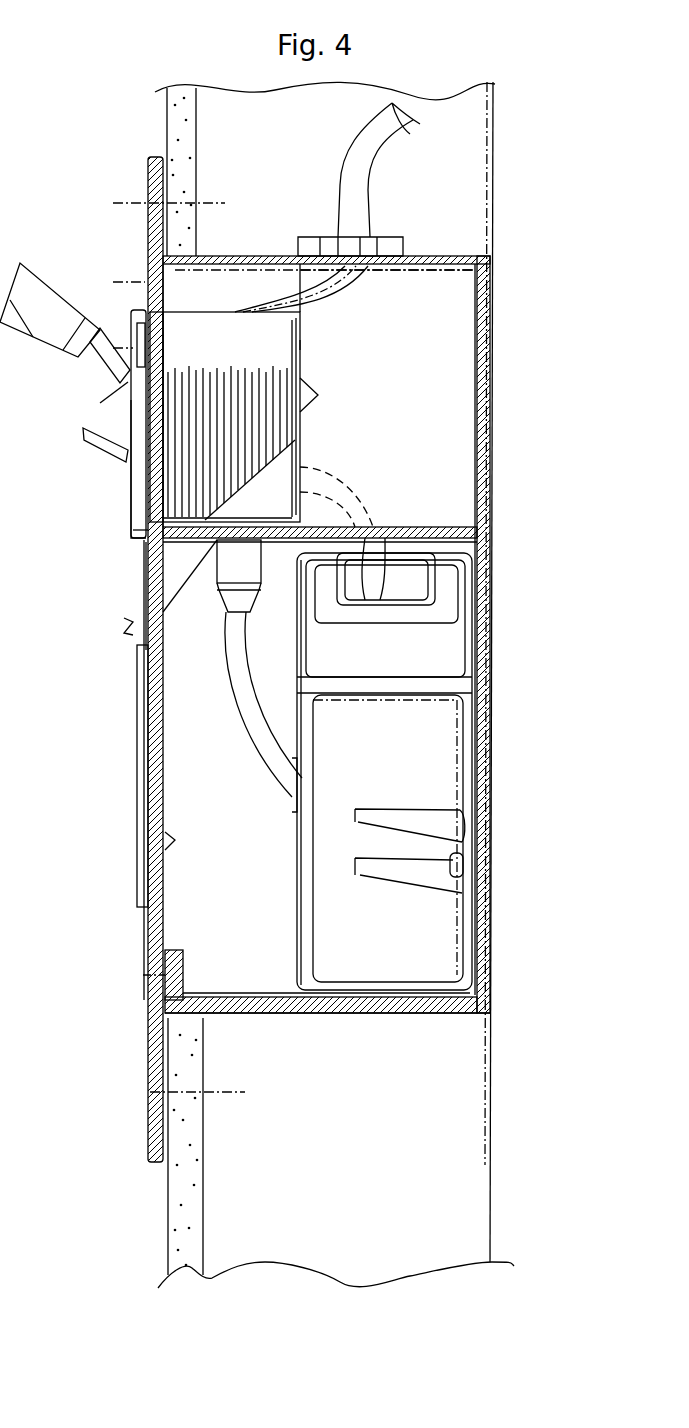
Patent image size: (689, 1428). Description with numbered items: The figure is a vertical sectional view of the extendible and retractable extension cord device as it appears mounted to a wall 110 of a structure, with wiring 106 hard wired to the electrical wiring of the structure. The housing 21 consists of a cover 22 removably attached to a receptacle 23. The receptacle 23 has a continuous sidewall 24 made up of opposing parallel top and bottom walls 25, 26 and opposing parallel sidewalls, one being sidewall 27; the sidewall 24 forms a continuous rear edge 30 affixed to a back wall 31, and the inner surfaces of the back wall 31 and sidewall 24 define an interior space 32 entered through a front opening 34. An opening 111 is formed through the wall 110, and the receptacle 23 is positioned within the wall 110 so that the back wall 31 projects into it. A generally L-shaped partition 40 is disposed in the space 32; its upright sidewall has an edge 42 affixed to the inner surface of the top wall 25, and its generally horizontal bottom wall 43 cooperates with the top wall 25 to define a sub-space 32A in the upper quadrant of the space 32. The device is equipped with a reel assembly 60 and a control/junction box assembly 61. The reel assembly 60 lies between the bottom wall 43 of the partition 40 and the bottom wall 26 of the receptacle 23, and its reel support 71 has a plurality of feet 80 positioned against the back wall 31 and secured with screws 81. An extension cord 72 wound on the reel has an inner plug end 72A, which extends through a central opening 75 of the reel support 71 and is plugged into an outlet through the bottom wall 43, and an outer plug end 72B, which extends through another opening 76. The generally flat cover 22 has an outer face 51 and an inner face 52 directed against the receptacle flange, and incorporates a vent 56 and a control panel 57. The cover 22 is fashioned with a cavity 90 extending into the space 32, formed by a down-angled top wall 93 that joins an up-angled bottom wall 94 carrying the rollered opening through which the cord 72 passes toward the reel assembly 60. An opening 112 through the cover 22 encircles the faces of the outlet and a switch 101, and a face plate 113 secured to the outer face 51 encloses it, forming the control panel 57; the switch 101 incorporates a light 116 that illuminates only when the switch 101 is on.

The housing 21 is at (145, 1068).
The cover 22 is at (145, 930).
The receptacle 23 is at (362, 1020).
The continuous sidewall 24 is at (300, 1015).
The top wall 25 is at (244, 256).
The bottom wall 26 is at (405, 1015).
The sidewall 27 is at (135, 700).
The rear edge 30 is at (493, 257).
The back wall 31 is at (495, 437).
The interior space 32 is at (252, 849).
The sub-space 32A is at (445, 399).
The opening 34 is at (150, 852).
The partition 40 is at (478, 358).
The edge 42 is at (425, 272).
The bottom wall 43 is at (395, 527).
The outer face 51 is at (145, 1000).
The inner face 52 is at (170, 942).
The vent 56 is at (135, 770).
The control panel 57 is at (150, 548).
The reel assembly 60 is at (440, 755).
The control/junction box assembly 61 is at (305, 343).
The reel support 71 is at (445, 720).
The extension cord 72 is at (245, 684).
The inner plug end 72A is at (250, 565).
The outer plug end 72B is at (40, 275).
The central opening 75 is at (297, 780).
The opening 76 is at (415, 595).
The feet 80 is at (488, 822).
The screws 81 is at (458, 870).
The cavity 90 is at (313, 412).
The down-angled top wall 93 is at (303, 392).
The up-angled bottom wall 94 is at (188, 627).
The switch 101 is at (110, 503).
The wiring 106 is at (390, 115).
The wall 110 is at (462, 92).
The opening 111 is at (125, 634).
The opening 112 is at (157, 415).
The face plate 113 is at (101, 571).
The light 116 is at (130, 328).